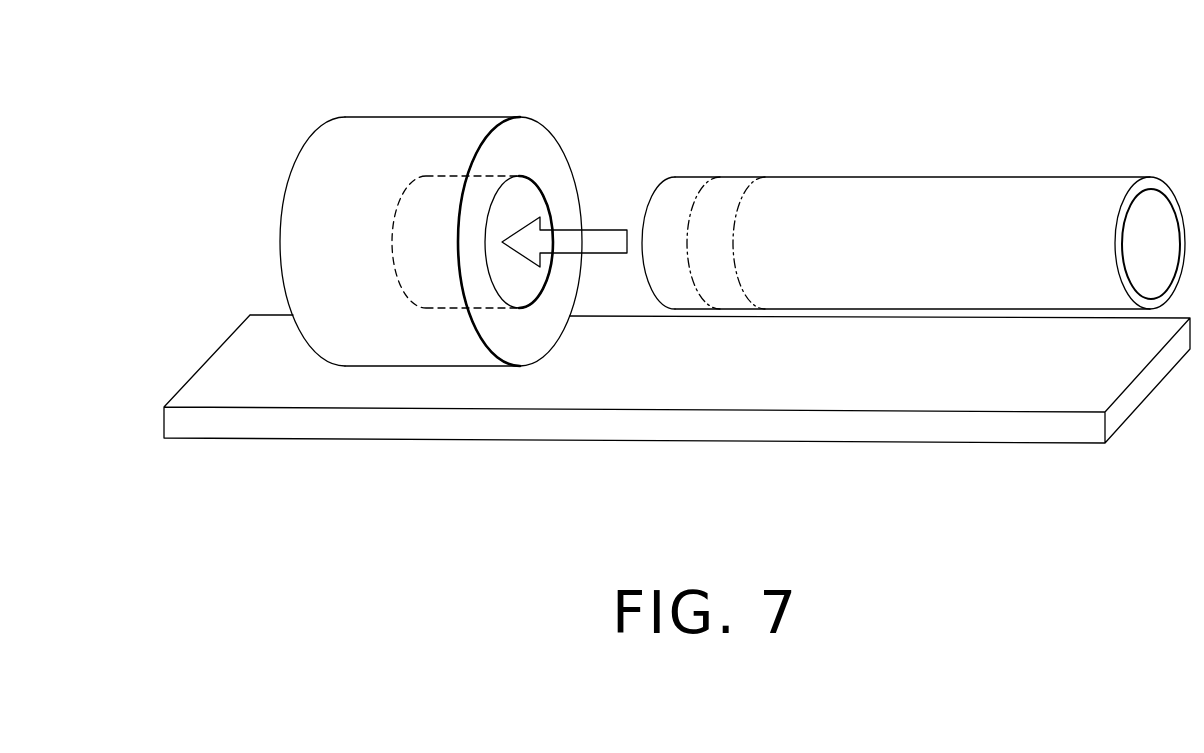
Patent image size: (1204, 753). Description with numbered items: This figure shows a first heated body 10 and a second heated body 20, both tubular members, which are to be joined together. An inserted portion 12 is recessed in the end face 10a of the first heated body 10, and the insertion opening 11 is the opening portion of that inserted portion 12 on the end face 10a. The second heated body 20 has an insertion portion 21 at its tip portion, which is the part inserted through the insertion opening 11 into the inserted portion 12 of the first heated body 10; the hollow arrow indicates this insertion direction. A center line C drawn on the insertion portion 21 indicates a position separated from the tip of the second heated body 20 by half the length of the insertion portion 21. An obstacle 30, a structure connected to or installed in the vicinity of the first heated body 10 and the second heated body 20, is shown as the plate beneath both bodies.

The first heated body 10 is at (455, 192).
The end face 10a is at (528, 142).
The insertion opening 11 is at (545, 192).
The inserted portion 12 is at (392, 243).
The second heated body 20 is at (913, 234).
The insertion portion 21 is at (705, 252).
The center line C is at (692, 277).
The obstacle 30 is at (797, 427).